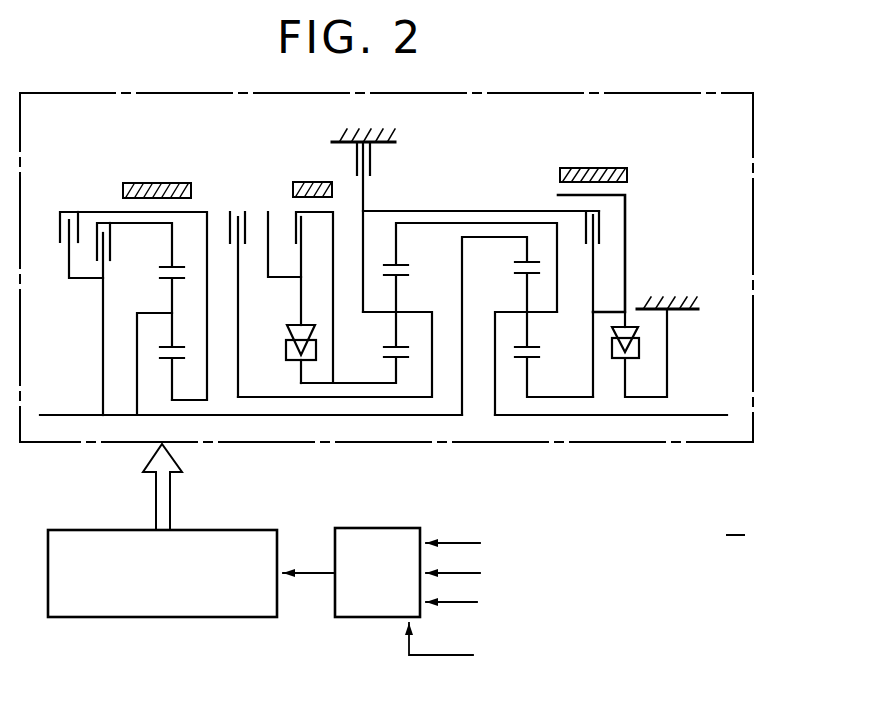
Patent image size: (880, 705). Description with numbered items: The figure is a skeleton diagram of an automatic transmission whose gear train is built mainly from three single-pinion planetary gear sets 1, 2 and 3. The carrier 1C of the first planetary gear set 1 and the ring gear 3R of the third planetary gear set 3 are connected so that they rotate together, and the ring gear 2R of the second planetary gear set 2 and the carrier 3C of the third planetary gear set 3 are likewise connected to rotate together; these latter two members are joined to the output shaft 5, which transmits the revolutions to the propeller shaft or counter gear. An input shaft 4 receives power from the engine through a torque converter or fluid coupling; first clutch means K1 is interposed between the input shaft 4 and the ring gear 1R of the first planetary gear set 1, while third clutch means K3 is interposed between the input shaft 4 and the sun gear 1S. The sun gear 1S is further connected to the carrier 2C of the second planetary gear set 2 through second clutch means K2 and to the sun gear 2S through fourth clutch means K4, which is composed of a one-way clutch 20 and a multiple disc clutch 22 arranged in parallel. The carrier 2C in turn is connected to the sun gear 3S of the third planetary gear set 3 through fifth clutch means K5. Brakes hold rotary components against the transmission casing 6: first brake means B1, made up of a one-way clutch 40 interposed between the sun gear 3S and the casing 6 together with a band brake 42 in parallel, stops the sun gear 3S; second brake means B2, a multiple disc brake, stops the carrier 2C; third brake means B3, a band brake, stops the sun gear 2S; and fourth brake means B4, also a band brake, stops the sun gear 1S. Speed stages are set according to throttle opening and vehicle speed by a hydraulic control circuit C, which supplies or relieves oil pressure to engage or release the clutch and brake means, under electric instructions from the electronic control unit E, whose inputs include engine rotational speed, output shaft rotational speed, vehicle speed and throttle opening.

The first planetary gear set 1 is at (152, 408).
The second planetary gear set 2 is at (404, 398).
The third planetary gear set 3 is at (536, 402).
The input shaft 4 is at (60, 414).
The output shaft 5 is at (687, 413).
The transmission casing 6 is at (374, 133).
The one-way clutch 20 is at (297, 328).
The multiple disc clutch 22 is at (294, 225).
The one-way clutch 40 is at (627, 317).
The band brake 42 is at (594, 167).
The first brake means B1 is at (647, 254).
The second brake means B2 is at (469, 207).
The third brake means B3 is at (313, 270).
The fourth brake means B4 is at (157, 178).
The first clutch means K1 is at (134, 319).
The second clutch means K2 is at (238, 291).
The third clutch means K3 is at (131, 293).
The fourth clutch means K4 is at (312, 230).
The fifth clutch means K5 is at (606, 304).
The ring gear of the first planetary gear set 1R is at (182, 294).
The carrier of the first planetary gear set 1C is at (149, 351).
The sun gear of the first planetary gear set 1S is at (181, 373).
The ring gear of the second planetary gear set 2R is at (470, 285).
The carrier of the second planetary gear set 2C is at (338, 341).
The sun gear of the second planetary gear set 2S is at (365, 365).
The ring gear of the third planetary gear set 3R is at (500, 326).
The carrier of the third planetary gear set 3C is at (519, 351).
The sun gear of the third planetary gear set 3S is at (554, 372).
The hydraulic control circuit C is at (142, 618).
The electronic control unit E is at (380, 606).